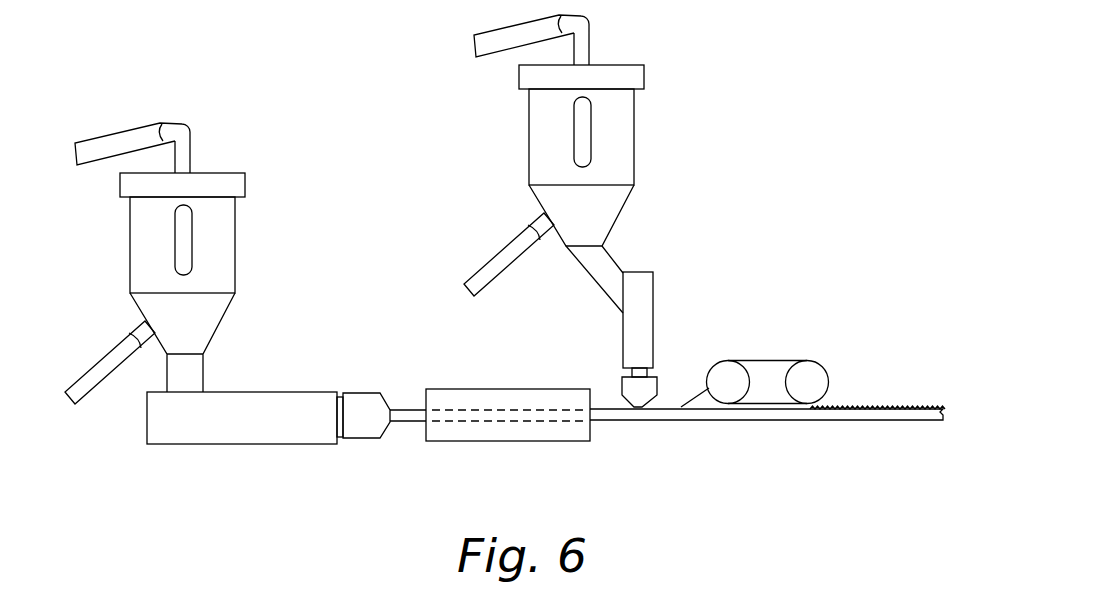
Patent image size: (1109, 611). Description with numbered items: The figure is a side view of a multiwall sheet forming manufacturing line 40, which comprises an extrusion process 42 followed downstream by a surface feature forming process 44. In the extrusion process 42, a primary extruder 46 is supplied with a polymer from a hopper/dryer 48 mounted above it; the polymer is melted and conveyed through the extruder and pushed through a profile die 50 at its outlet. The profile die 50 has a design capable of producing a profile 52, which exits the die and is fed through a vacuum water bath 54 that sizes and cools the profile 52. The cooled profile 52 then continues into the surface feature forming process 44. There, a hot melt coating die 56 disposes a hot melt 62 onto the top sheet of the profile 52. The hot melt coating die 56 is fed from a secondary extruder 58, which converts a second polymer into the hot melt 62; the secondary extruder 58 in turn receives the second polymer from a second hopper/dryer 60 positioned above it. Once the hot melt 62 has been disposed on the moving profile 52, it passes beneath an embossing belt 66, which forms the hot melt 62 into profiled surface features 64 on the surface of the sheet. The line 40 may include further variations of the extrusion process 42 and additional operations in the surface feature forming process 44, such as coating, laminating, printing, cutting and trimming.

The multiwall sheet forming manufacturing line 40 is at (318, 93).
The extrusion process 42 is at (627, 450).
The surface feature forming process 44 is at (838, 445).
The primary extruder 46 is at (247, 405).
The hopper/dryer 48 is at (212, 327).
The profile die 50 is at (360, 399).
The profile 52 is at (412, 407).
The vacuum water bath 54 is at (513, 383).
The hot melt coating die 56 is at (613, 372).
The secondary extruder 58 is at (648, 300).
The second hopper/dryer 60 is at (607, 215).
The hot melt 62 is at (663, 397).
The profiled surface features 64 is at (872, 392).
The embossing belt 66 is at (772, 352).